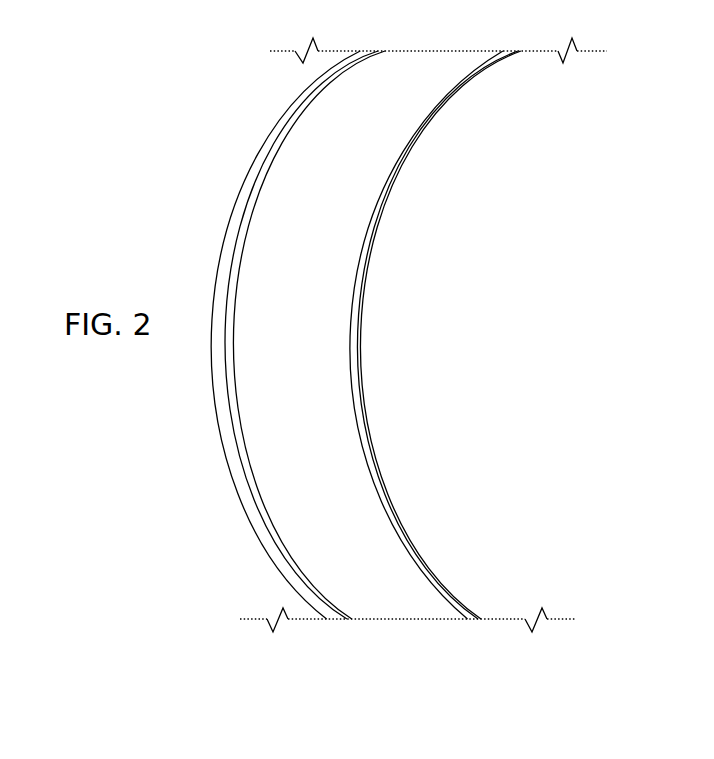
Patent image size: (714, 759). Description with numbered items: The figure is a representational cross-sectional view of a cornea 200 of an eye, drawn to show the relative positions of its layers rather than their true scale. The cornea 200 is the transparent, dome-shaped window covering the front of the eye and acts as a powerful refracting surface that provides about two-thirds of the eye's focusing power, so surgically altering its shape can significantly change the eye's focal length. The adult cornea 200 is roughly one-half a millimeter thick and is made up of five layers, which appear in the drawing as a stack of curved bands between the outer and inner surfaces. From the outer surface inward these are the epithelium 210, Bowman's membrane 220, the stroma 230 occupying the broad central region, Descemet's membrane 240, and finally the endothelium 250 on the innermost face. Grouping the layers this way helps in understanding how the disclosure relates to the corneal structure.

The cornea 200 is at (328, 335).
The epithelium 210 is at (249, 172).
The Bowman's membrane 220 is at (250, 219).
The stroma 230 is at (317, 451).
The Descemet's membrane 240 is at (396, 532).
The endothelium 250 is at (363, 393).